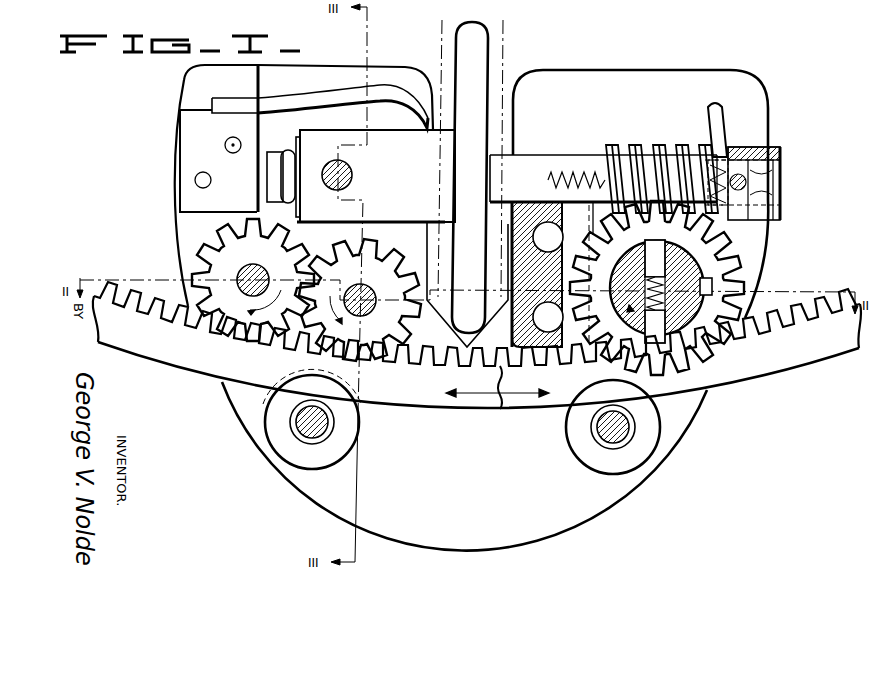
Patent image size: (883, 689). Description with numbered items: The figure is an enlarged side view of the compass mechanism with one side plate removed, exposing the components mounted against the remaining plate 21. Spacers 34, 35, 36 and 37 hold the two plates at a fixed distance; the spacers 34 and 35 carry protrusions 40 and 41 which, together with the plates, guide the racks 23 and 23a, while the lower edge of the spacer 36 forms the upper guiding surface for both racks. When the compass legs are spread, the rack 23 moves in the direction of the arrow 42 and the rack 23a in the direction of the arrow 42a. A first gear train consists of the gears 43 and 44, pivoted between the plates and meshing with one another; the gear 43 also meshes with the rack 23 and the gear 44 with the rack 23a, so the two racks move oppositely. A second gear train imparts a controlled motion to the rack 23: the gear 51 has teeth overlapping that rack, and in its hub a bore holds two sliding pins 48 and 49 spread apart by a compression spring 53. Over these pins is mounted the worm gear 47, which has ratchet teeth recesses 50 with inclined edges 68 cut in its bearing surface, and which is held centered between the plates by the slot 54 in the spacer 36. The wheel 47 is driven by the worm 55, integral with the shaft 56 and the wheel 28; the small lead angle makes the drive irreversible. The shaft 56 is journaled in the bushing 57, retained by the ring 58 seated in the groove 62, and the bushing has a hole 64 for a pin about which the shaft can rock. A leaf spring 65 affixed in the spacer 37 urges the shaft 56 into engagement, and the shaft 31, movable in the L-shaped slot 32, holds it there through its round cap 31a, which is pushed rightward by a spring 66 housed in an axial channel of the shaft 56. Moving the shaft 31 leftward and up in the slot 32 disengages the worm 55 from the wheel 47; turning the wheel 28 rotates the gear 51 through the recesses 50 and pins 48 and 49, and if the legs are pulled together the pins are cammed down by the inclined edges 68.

The plate 21 is at (613, 70).
The rack 23 is at (548, 407).
The rack 23a is at (395, 408).
The wheel 28 is at (482, 60).
The shaft 31 is at (773, 205).
The round cap 31a is at (780, 150).
The L-shaped slot 32 is at (718, 122).
The spacer 34 is at (303, 432).
The spacer 35 is at (620, 427).
The spacer 36 is at (527, 207).
The spacer 37 is at (190, 88).
The protrusion 40 is at (327, 463).
The protrusion 41 is at (583, 468).
The arrow 42 is at (523, 397).
The arrow 42a is at (470, 397).
The gear 43 is at (385, 255).
The gear 44 is at (220, 250).
The worm gear 47 is at (727, 258).
The pin 48 is at (655, 250).
The pin 49 is at (665, 345).
The ratchet teeth recesses 50 is at (705, 282).
The gear 51 is at (689, 255).
The compression spring 53 is at (668, 327).
The slot 54 is at (578, 220).
The worm 55 is at (635, 143).
The shaft 56 is at (535, 155).
The bushing 57 is at (317, 128).
The ring 58 is at (287, 160).
The groove 62 is at (290, 165).
The hole 64 is at (354, 170).
The leaf spring 65 is at (210, 105).
The spring 66 is at (562, 178).
The inclined edges 68 is at (641, 318).